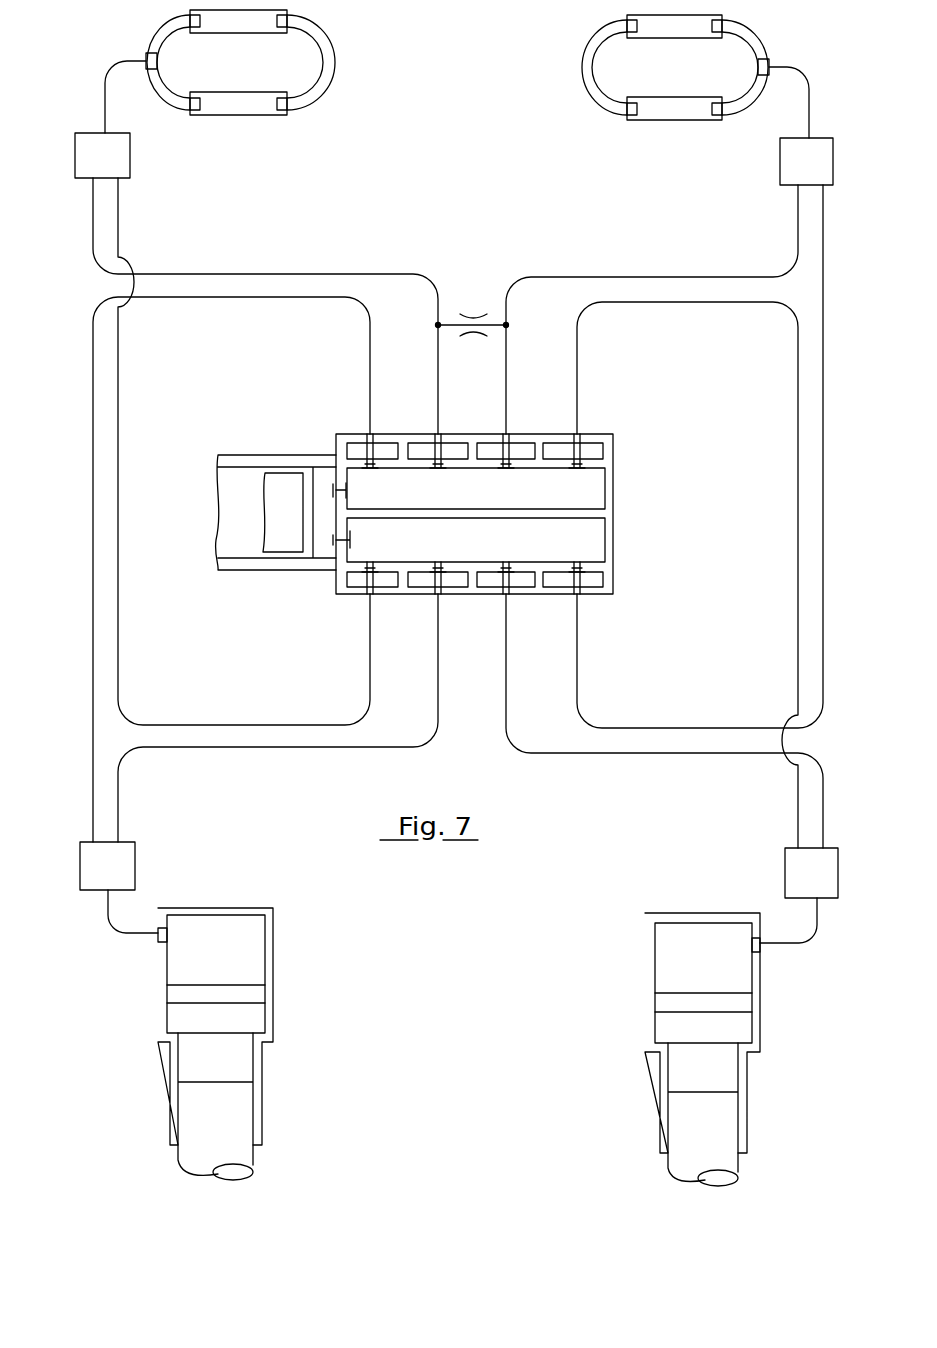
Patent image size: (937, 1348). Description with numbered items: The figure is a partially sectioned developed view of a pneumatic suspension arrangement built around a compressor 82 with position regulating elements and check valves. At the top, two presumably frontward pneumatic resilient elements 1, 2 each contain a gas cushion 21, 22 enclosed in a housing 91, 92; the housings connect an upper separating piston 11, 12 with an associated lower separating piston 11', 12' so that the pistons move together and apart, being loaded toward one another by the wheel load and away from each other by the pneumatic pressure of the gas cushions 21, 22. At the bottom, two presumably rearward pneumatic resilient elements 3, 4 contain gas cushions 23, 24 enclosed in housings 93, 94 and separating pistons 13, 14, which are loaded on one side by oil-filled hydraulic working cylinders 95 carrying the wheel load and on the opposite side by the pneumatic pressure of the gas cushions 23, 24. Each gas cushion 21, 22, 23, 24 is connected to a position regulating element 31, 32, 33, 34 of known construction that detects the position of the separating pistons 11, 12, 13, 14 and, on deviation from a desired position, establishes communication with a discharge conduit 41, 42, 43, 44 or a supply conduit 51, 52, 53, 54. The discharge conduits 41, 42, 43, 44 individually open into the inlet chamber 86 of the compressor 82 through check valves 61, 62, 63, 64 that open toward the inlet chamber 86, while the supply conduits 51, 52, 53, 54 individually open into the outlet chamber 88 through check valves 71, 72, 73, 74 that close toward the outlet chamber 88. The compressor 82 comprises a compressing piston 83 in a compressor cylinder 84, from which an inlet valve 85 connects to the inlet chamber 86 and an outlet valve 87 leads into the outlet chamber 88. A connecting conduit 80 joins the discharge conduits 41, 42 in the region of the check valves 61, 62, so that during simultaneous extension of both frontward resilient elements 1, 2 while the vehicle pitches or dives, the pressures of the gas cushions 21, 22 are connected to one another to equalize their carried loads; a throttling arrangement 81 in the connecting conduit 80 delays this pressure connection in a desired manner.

The pneumatic resilient element 1 is at (345, 32).
The pneumatic resilient element 2 is at (565, 29).
The pneumatic resilient element 3 is at (313, 939).
The pneumatic resilient element 4 is at (607, 944).
The upper separating piston 11 is at (238, 39).
The lower separating piston 11' is at (238, 128).
The upper separating piston 12 is at (674, 44).
The lower separating piston 12' is at (674, 133).
The separating piston 13 is at (175, 993).
The separating piston 14 is at (743, 997).
The gas cushion 21 is at (313, 58).
The gas cushion 22 is at (605, 63).
The gas cushion 23 is at (250, 955).
The gas cushion 24 is at (668, 962).
The position regulating element 31 is at (122, 153).
The position regulating element 32 is at (790, 173).
The position regulating element 33 is at (122, 870).
The position regulating element 34 is at (793, 877).
The discharge conduit 41 is at (232, 273).
The discharge conduit 42 is at (688, 285).
The discharge conduit 43 is at (265, 298).
The discharge conduit 44 is at (670, 297).
The supply conduit 51 is at (247, 718).
The supply conduit 52 is at (702, 727).
The supply conduit 53 is at (257, 748).
The supply conduit 54 is at (695, 755).
The check valve 61 is at (436, 470).
The check valve 62 is at (506, 470).
The check valve 63 is at (370, 470).
The check valve 64 is at (577, 470).
The check valve 71 is at (370, 565).
The check valve 72 is at (576, 565).
The check valve 73 is at (437, 565).
The check valve 74 is at (505, 565).
The connecting conduit 80 is at (492, 323).
The throttling arrangement 81 is at (472, 313).
The compressor 82 is at (229, 407).
The compressing piston 83 is at (288, 470).
The compressor cylinder 84 is at (323, 513).
The inlet valve 85 is at (333, 488).
The inlet chamber 86 is at (595, 495).
The outlet valve 87 is at (340, 540).
The outlet chamber 88 is at (595, 535).
The housing 91 is at (322, 85).
The housing 92 is at (586, 85).
The housing 93 is at (268, 928).
The housing 94 is at (650, 938).
The hydraulic working cylinder 95 is at (233, 1050).